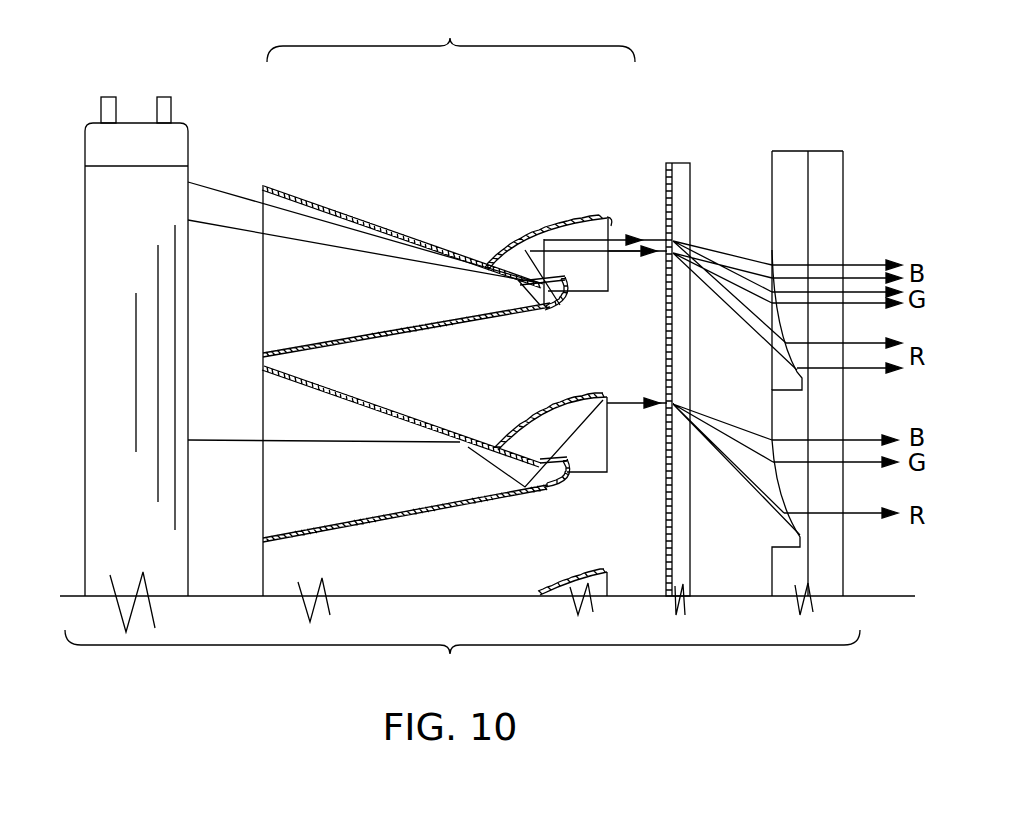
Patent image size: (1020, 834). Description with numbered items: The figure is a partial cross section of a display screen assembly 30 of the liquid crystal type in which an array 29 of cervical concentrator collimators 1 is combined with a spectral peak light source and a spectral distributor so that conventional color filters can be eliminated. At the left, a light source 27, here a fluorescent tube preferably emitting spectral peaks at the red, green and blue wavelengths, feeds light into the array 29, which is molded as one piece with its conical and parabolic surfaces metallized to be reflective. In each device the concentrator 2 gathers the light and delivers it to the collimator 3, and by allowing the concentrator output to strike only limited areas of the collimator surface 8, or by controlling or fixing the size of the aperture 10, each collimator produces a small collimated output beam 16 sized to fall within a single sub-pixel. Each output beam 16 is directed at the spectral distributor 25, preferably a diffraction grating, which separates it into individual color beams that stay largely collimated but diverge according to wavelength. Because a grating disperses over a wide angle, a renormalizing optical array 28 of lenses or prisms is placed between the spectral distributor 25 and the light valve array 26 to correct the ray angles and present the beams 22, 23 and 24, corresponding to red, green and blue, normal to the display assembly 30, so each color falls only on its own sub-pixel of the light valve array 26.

The cervical concentrator collimator 1 is at (455, 205).
The concentrator 2 is at (369, 203).
The collimator 3 is at (573, 203).
The collimator surface 8 is at (610, 223).
The aperture 10 is at (545, 300).
The output beam 16 is at (625, 271).
The light beam 22 is at (725, 298).
The light beam 23 is at (710, 257).
The light beam 24 is at (745, 258).
The spectral distributor 25 is at (675, 163).
The light valve array 26 is at (846, 196).
The light source 27 is at (178, 142).
The renormalizing optical array 28 is at (789, 157).
The array of cervical concentrator collimators 29 is at (451, 32).
The display screen assembly 30 is at (462, 661).